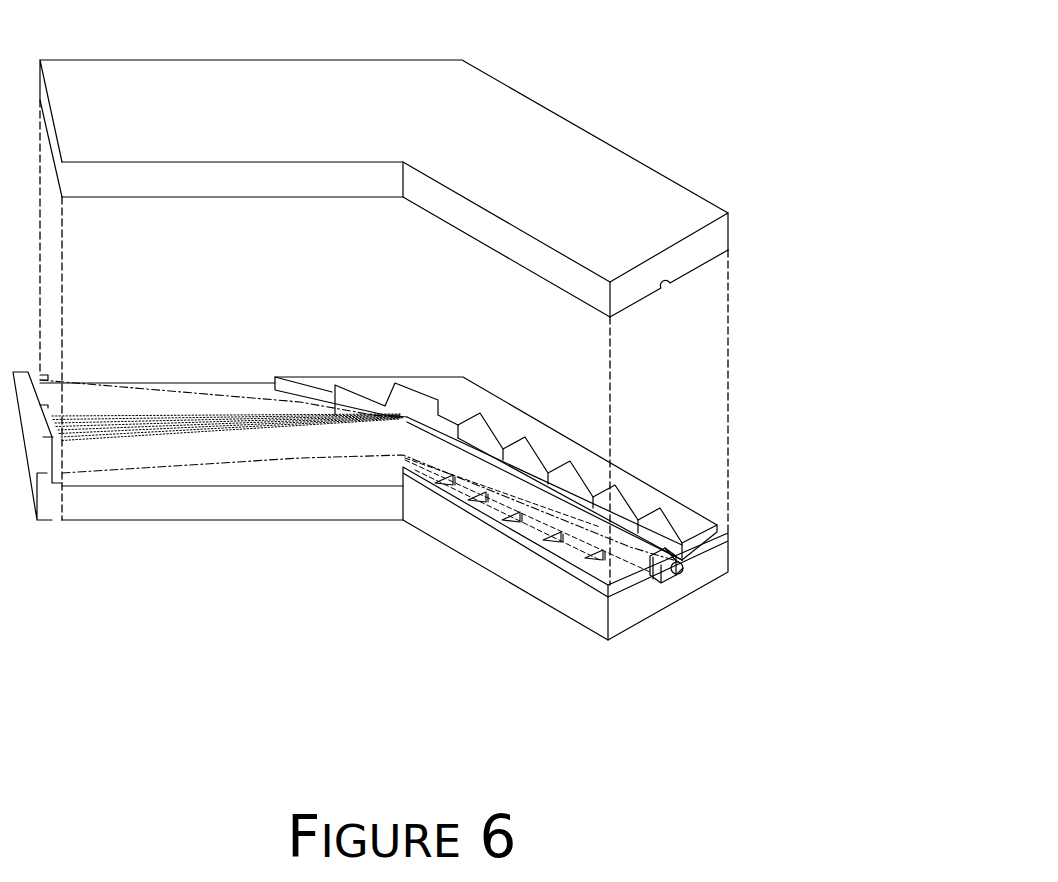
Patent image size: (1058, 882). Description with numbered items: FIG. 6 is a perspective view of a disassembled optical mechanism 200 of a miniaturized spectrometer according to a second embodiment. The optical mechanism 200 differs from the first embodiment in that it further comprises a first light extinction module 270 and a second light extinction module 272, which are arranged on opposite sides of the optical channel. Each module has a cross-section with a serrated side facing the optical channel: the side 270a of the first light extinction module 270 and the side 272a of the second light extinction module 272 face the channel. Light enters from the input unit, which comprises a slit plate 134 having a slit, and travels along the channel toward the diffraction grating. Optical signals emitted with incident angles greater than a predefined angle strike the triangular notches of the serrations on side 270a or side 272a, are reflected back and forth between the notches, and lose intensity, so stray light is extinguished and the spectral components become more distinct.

The optical mechanism 200 is at (800, 33).
The first light extinction module 270 is at (567, 550).
The side of the first light extinction module 270a is at (580, 520).
The second light extinction module 272 is at (621, 480).
The side of the second light extinction module 272a is at (522, 470).
The slit plate 134 is at (650, 580).